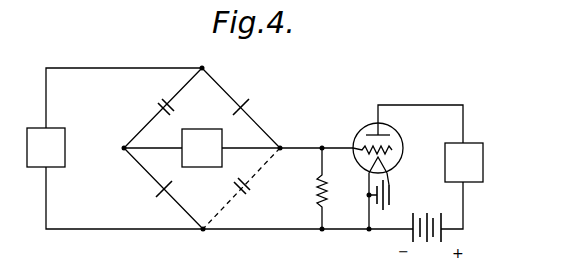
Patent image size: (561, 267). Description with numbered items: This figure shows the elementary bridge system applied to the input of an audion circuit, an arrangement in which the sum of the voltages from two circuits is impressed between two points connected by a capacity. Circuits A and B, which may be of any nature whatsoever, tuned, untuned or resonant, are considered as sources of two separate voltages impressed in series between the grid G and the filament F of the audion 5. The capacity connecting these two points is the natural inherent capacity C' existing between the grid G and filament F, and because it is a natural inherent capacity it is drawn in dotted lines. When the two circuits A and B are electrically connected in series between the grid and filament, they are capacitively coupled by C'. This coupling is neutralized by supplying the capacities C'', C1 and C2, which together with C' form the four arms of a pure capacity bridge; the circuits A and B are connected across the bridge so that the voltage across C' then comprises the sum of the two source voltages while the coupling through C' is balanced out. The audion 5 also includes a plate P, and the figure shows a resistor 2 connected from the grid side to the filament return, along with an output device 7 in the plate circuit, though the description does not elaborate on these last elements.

The resistor 2 is at (309, 188).
The audion 5 is at (376, 167).
The indicating/receiving device 7 is at (464, 162).
The electric circuit A is at (46, 147).
The electric circuit B is at (202, 148).
The capacity C1 is at (254, 102).
The capacity C2 is at (148, 102).
The natural inherent capacity C' is at (253, 194).
The capacity C'' is at (147, 196).
The plate (anode) P is at (376, 120).
The grid G is at (364, 143).
The filament F is at (370, 193).